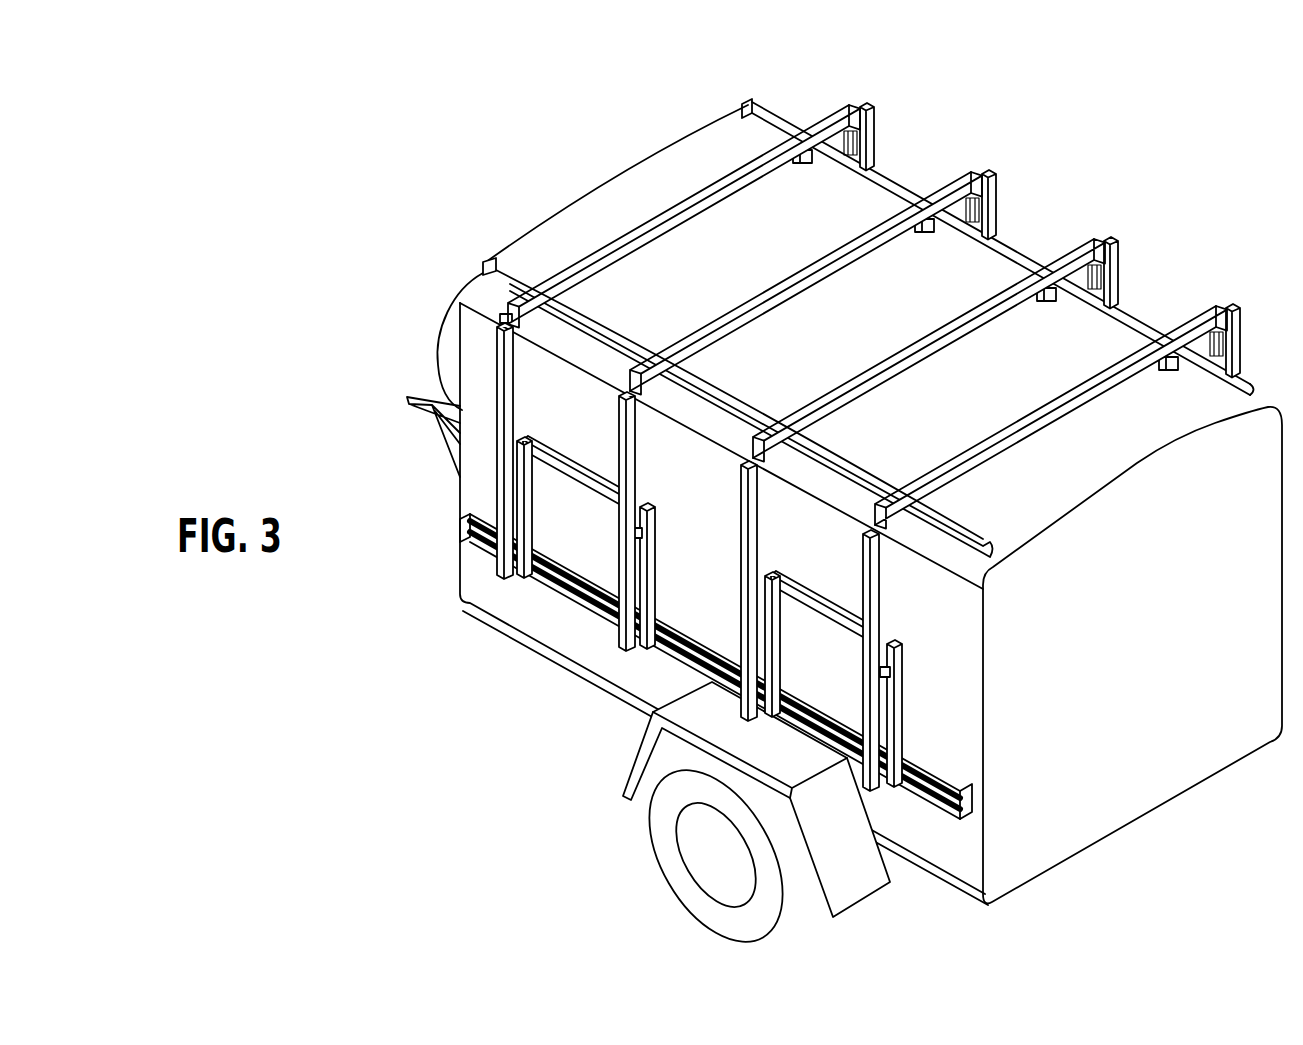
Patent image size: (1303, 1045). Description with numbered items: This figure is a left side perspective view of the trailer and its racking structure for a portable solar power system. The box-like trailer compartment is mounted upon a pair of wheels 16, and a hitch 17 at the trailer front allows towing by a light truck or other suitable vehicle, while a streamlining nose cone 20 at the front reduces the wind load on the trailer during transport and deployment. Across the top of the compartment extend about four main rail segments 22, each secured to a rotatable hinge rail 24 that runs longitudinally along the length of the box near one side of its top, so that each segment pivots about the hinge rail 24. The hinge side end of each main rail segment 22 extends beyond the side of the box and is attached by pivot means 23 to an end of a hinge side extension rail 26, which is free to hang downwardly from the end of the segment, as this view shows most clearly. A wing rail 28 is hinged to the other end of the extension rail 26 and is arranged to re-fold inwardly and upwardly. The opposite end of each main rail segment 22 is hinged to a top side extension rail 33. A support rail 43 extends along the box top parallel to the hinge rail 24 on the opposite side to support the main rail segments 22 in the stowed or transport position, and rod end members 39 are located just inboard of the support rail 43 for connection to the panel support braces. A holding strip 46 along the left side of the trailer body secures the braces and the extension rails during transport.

The wheels 16 is at (681, 858).
The hitch 17 is at (432, 438).
The streamlining nose cone 20 is at (446, 328).
The main rail segments 22 is at (962, 176).
The pivot means 23 is at (500, 315).
The rotatable hinge rail 24 is at (517, 277).
The hinge side extension rail 26 is at (508, 555).
The wing rail 28 is at (527, 530).
The top side extension rail 33 is at (1239, 356).
The rod end members 39 is at (1050, 299).
The support rail 43 is at (1006, 244).
The holding strip 46 is at (950, 812).